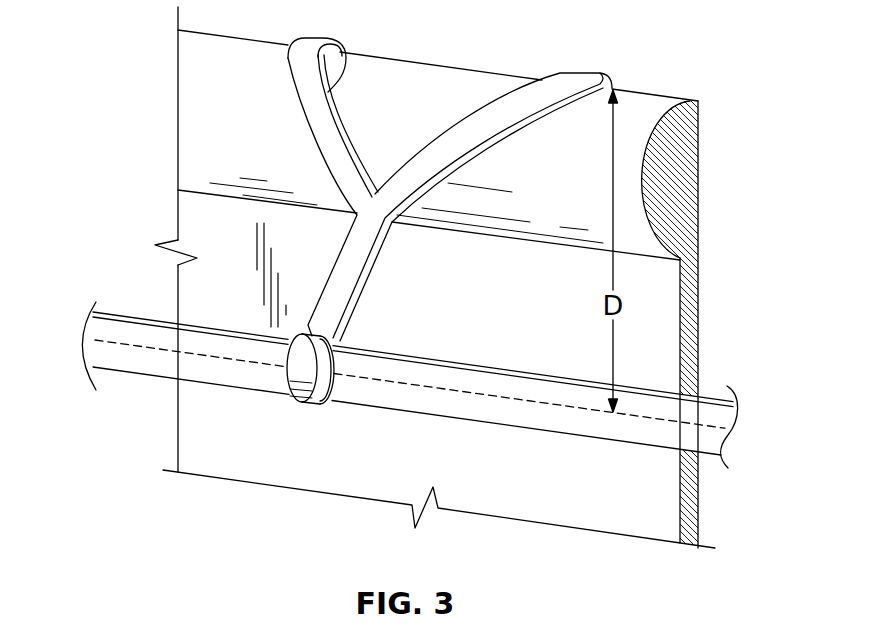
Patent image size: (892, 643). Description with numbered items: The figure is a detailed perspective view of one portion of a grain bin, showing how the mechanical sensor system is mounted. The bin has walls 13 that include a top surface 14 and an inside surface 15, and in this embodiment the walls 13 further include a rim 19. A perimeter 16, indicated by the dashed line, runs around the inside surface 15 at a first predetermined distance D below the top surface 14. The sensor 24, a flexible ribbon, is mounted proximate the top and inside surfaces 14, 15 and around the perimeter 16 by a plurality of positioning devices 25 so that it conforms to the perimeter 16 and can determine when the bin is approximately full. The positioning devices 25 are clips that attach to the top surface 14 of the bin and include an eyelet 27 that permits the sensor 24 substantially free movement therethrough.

The walls 13 is at (699, 322).
The top surface 14 is at (474, 68).
The inside surface 15 is at (222, 236).
The perimeter 16 is at (460, 393).
The rim 19 is at (638, 200).
The sensor 24 is at (547, 430).
The positioning devices 25 is at (340, 92).
The eyelet 27 is at (302, 398).